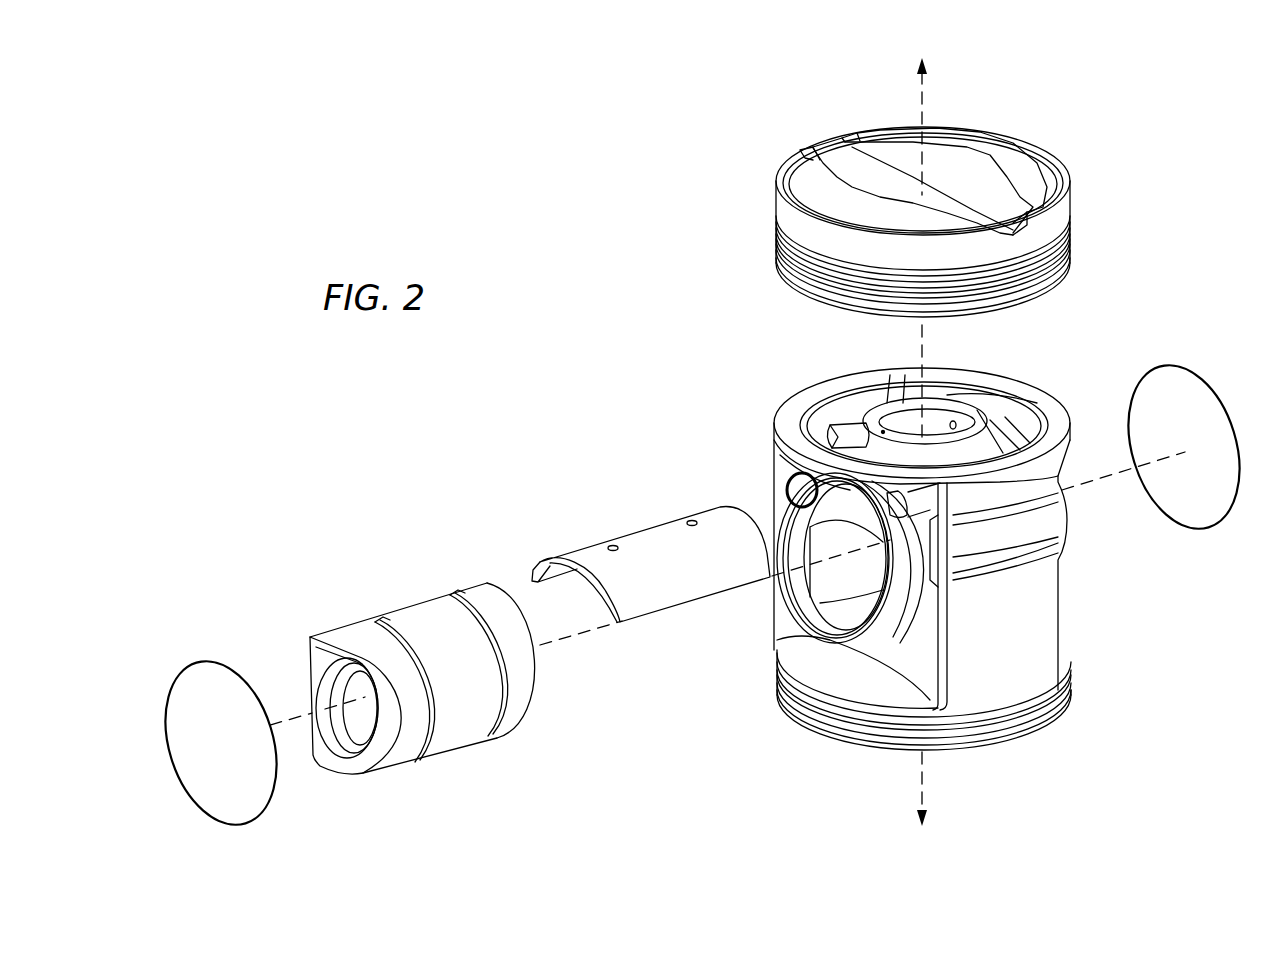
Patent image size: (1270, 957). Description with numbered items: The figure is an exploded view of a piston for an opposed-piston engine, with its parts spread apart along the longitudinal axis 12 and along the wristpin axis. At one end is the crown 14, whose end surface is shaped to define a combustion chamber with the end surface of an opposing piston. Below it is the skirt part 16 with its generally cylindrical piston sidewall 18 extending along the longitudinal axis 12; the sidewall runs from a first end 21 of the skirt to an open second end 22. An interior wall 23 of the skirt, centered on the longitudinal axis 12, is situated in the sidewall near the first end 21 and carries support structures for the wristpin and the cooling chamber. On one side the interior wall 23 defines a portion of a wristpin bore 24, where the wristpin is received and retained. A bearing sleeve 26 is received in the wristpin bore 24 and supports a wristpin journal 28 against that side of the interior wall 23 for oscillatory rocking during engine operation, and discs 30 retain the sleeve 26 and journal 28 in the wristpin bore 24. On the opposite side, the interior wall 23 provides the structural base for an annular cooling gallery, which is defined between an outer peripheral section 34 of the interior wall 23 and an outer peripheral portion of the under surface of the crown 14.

The longitudinal axis 12 is at (928, 101).
The crown 14 is at (1100, 226).
The skirt part 16 is at (1092, 582).
The piston sidewall 18 is at (1043, 642).
The first end 21 is at (988, 378).
The second end 22 is at (864, 756).
The interior wall 23 is at (853, 433).
The wristpin bore 24 is at (790, 503).
The bearing sleeve 26 is at (647, 537).
The wristpin journal 28 is at (421, 615).
The discs 30 is at (188, 743).
The outer peripheral section 34 is at (827, 433).